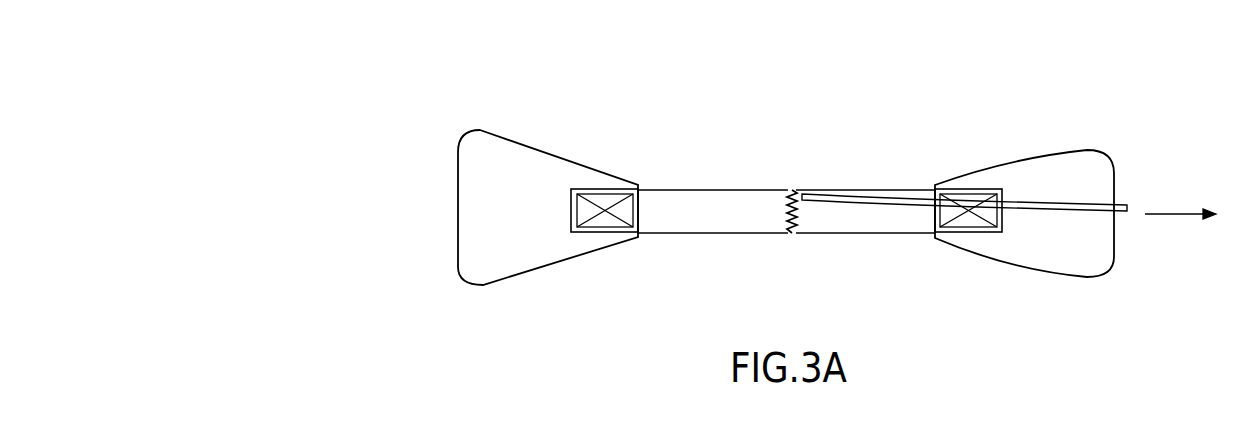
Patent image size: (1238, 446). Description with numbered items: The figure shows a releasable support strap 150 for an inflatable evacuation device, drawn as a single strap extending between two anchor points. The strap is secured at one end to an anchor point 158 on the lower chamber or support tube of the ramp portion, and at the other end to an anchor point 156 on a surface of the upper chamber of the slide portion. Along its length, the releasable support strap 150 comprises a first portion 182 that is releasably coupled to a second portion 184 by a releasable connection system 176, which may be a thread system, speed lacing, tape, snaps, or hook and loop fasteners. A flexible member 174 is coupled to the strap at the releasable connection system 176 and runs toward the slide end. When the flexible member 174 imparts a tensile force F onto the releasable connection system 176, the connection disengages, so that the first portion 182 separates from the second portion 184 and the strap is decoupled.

The releasable support strap 150 is at (326, 139).
The anchor point 156 is at (1088, 149).
The anchor point 158 is at (535, 146).
The flexible member 174 is at (850, 194).
The releasable connection system 176 is at (790, 190).
The first portion 182 is at (682, 225).
The second portion 184 is at (882, 227).